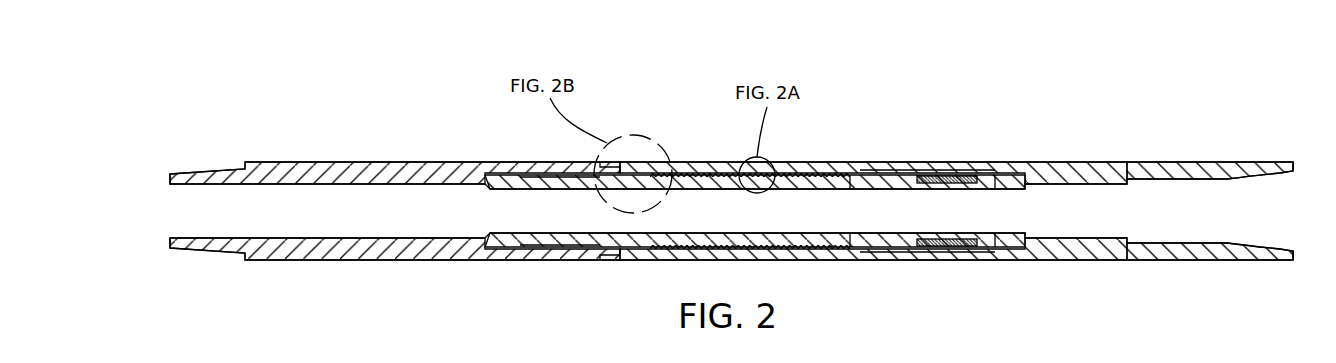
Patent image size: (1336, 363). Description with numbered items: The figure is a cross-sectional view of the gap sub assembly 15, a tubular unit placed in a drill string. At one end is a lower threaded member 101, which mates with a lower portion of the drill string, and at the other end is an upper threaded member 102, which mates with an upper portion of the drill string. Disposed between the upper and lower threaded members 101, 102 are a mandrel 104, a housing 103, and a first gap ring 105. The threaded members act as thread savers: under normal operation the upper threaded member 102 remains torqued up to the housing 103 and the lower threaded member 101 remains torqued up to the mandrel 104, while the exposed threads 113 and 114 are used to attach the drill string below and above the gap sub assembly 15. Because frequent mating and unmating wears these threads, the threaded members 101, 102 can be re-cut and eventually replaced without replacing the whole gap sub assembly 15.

The gap sub assembly 15 is at (150, 92).
The lower threaded member 101 is at (327, 162).
The upper threaded member 102 is at (1227, 163).
The housing 103 is at (895, 162).
The mandrel 104 is at (692, 189).
The first gap ring 105 is at (630, 165).
The exposed threads 113 is at (203, 173).
The exposed threads 114 is at (1243, 245).